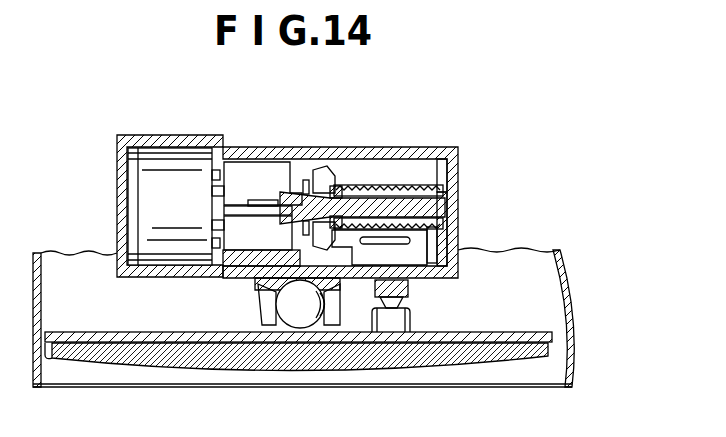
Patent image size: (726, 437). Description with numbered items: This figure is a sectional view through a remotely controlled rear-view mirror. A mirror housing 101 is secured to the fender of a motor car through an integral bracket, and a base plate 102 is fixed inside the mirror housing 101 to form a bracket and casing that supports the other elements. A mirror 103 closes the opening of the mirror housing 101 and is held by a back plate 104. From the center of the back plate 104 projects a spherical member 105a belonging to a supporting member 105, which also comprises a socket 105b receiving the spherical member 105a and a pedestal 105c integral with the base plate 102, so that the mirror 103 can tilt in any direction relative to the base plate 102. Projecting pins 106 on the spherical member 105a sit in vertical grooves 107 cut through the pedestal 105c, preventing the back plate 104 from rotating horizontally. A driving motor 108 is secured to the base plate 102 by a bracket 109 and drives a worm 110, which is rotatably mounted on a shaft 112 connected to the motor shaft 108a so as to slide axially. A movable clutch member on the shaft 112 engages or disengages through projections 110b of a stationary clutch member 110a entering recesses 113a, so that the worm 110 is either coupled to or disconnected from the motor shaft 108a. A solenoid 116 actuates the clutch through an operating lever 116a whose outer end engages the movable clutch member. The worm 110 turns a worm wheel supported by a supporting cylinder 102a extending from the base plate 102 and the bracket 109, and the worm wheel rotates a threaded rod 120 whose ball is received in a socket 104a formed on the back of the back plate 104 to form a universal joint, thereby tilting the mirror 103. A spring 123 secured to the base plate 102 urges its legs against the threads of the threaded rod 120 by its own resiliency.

The mirror housing 101 is at (574, 330).
The base plate 102 is at (458, 248).
The supporting cylinder 102a is at (447, 232).
The mirror 103 is at (234, 350).
The back plate 104 is at (508, 332).
The socket 104a is at (400, 325).
The supporting member 105 is at (271, 356).
The spherical member 105a is at (282, 322).
The socket 105b is at (262, 296).
The pedestal 105c is at (326, 298).
The projecting pins 106 is at (298, 312).
The vertical grooves 107 is at (335, 308).
The driving motor 108 is at (156, 166).
The motor shaft 108a is at (224, 200).
The bracket 109 is at (197, 143).
The worm 110 is at (395, 188).
The stationary clutch member 110a is at (348, 188).
The projections 110b is at (340, 192).
The shaft 112 is at (278, 190).
The recesses 113a is at (333, 186).
The solenoid 116 is at (280, 200).
The operating lever 116a is at (300, 236).
The threaded rod 120 is at (412, 289).
The spring 123 is at (445, 205).